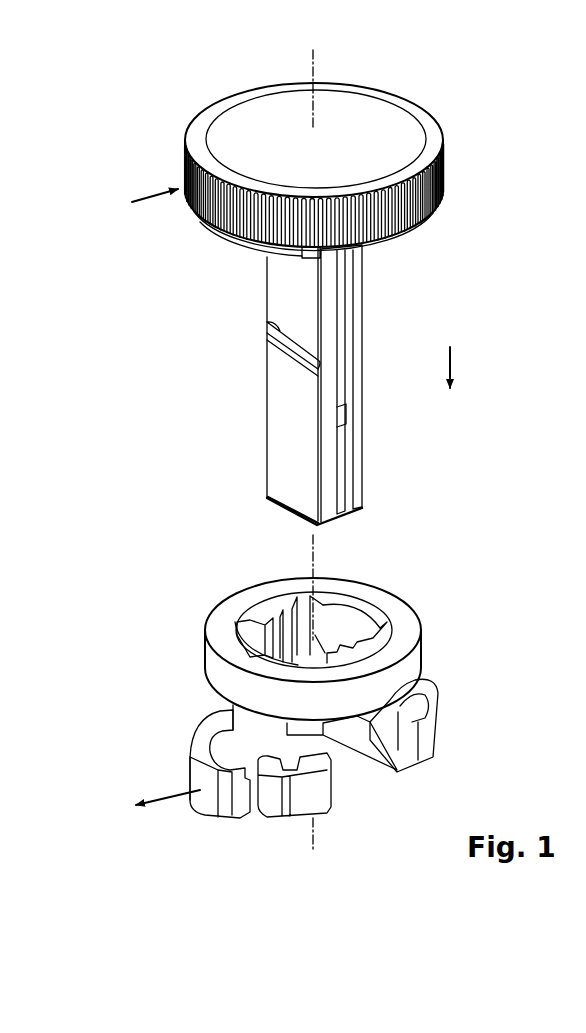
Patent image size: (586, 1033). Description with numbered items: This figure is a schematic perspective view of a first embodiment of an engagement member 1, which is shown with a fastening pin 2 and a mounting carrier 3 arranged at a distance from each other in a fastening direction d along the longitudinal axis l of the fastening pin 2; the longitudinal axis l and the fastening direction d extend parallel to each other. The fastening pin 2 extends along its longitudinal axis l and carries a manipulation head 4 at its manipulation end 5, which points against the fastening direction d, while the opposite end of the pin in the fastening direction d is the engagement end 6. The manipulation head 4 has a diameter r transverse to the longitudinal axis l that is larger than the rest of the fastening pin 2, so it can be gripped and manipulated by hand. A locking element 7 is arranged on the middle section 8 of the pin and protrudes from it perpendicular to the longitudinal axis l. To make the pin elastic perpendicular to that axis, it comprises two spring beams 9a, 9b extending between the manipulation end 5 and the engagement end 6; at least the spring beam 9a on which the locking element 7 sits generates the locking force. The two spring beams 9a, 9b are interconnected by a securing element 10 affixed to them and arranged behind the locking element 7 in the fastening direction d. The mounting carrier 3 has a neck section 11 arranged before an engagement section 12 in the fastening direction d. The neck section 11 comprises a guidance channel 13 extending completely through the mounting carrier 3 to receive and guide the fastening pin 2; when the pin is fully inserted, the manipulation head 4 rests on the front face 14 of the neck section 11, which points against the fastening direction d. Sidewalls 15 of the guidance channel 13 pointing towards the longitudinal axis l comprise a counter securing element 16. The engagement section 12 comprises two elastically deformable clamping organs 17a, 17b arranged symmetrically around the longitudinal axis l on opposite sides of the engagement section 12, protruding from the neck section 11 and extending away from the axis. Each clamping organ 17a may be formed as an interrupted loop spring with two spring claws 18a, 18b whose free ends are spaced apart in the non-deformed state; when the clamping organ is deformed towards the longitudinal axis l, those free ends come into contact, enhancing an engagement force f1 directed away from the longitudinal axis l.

The engagement member 1 is at (112, 84).
The fastening pin 2 is at (297, 388).
The mounting carrier 3 is at (174, 670).
The manipulation head 4 is at (221, 108).
The manipulation end 5 is at (246, 258).
The engagement end 6 is at (273, 505).
The locking element 7 is at (269, 321).
The middle section 8 is at (232, 373).
The spring beam 9a is at (331, 302).
The spring beam 9b is at (361, 320).
The securing element 10 is at (344, 420).
The neck section 11 is at (325, 614).
The engagement section 12 is at (181, 817).
The guidance channel 13 is at (376, 566).
The front face 14 is at (256, 598).
The sidewalls 15 is at (341, 607).
The counter securing element 16 is at (262, 622).
The clamping organ 17a is at (226, 821).
The second clamping organ 17b is at (442, 752).
The spring claw 18a is at (203, 788).
The spring claw 18b is at (281, 819).
The longitudinal axis l is at (317, 68).
The diameter r is at (432, 112).
The fastening direction d is at (456, 362).
The engagement force f1 is at (167, 800).